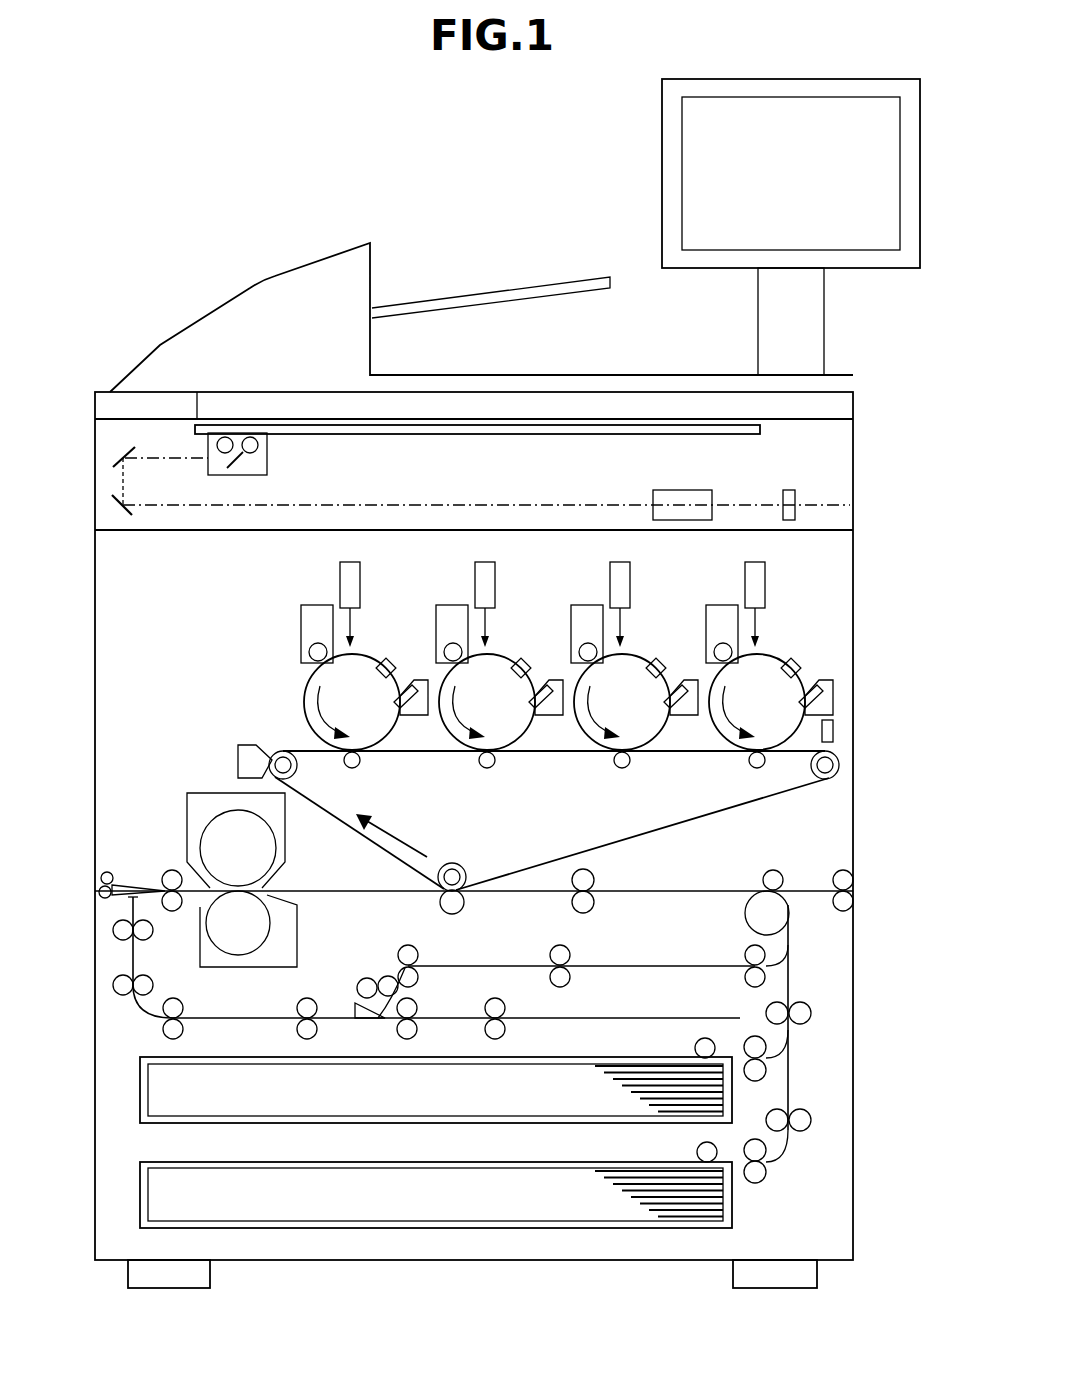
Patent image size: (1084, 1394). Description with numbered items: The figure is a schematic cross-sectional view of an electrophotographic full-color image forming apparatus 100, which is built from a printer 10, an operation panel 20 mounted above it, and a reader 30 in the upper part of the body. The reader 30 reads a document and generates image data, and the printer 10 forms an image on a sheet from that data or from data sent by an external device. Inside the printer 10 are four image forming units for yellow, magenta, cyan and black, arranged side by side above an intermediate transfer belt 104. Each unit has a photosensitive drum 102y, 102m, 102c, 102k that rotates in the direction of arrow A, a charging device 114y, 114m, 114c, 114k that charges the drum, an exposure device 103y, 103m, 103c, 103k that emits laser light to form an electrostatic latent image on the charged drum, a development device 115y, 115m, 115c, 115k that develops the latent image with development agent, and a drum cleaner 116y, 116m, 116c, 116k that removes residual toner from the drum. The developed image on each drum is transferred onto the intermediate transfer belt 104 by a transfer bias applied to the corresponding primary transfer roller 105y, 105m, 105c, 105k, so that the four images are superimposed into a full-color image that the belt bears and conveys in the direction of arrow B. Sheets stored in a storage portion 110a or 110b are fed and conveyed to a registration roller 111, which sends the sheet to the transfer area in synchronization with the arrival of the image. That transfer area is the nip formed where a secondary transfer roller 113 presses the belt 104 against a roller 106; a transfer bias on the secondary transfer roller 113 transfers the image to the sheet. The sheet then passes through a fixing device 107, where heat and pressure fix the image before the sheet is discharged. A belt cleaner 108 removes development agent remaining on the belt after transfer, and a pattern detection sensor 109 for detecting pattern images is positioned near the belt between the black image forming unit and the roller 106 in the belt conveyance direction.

The image forming apparatus 100 is at (190, 212).
The printer 10 is at (853, 587).
The operation panel 20 is at (662, 164).
The reader 30 is at (853, 471).
The photosensitive drum 102y is at (352, 654).
The photosensitive drum 102m is at (487, 654).
The photosensitive drum 102c is at (622, 654).
The photosensitive drum 102k is at (757, 654).
The exposure device 103y is at (350, 562).
The exposure device 103m is at (485, 562).
The exposure device 103c is at (622, 562).
The exposure device 103k is at (755, 562).
The intermediate transfer belt 104 is at (663, 832).
The primary transfer roller 105y is at (352, 768).
The primary transfer roller 105m is at (489, 768).
The primary transfer roller 105c is at (622, 768).
The primary transfer roller 105k is at (757, 768).
The roller 106 is at (452, 863).
The fixing device 107 is at (210, 793).
The belt cleaner 108 is at (248, 745).
The pattern detection sensor 109 is at (833, 731).
The storage portion 110a is at (430, 1105).
The storage portion 110b is at (430, 1210).
The registration roller 111 is at (590, 912).
The secondary transfer roller 113 is at (458, 912).
The charging device 114y is at (391, 659).
The charging device 114m is at (526, 659).
The charging device 114c is at (661, 659).
The charging device 114k is at (796, 659).
The development device 115y is at (317, 605).
The development device 115m is at (452, 605).
The development device 115c is at (587, 605).
The development device 115k is at (722, 605).
The drum cleaner 116y is at (420, 716).
The drum cleaner 116m is at (553, 716).
The drum cleaner 116c is at (690, 716).
The drum cleaner 116k is at (833, 693).